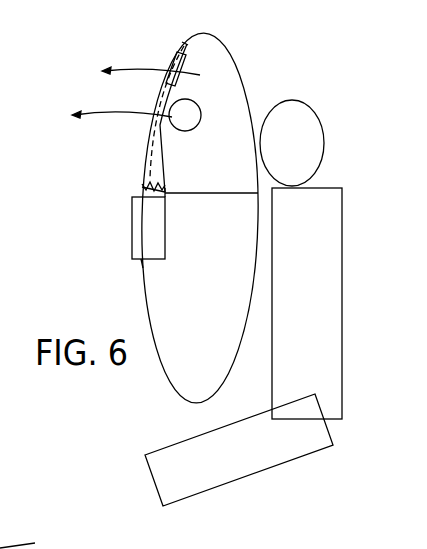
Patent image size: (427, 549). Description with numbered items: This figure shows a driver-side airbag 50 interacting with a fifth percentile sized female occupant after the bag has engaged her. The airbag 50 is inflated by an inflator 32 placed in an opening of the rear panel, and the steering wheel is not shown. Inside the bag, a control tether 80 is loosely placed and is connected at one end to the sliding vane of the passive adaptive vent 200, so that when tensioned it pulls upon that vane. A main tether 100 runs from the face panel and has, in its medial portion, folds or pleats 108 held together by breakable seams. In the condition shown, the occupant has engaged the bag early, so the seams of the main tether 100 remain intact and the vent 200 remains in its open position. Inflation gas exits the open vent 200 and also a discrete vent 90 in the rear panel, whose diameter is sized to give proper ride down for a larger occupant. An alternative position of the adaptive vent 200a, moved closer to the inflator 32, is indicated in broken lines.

The passive adaptive vent 200 is at (173, 53).
The adaptive vent 200a is at (136, 159).
The discrete vent 90 is at (192, 120).
The control tether 80 is at (160, 138).
The folds or pleats 108 is at (165, 173).
The main tether 100 is at (207, 198).
The inflator 32 is at (147, 235).
The airbag 50 is at (132, 167).